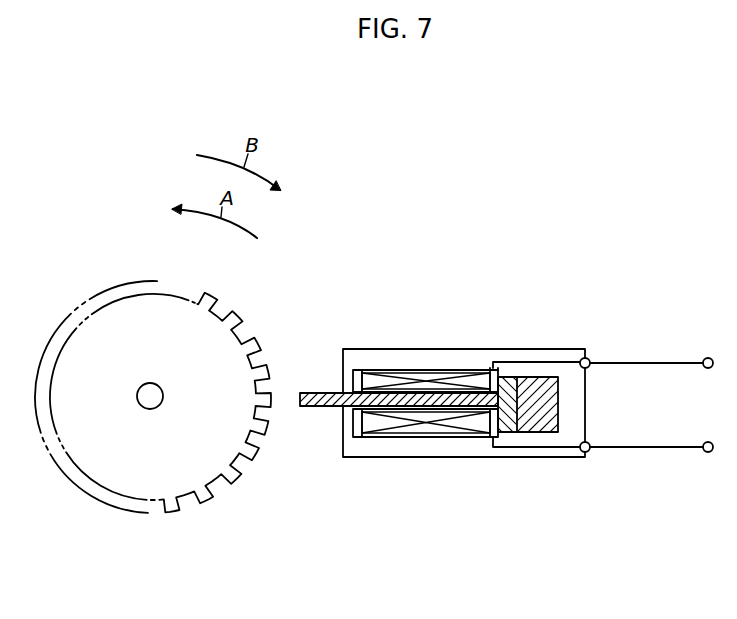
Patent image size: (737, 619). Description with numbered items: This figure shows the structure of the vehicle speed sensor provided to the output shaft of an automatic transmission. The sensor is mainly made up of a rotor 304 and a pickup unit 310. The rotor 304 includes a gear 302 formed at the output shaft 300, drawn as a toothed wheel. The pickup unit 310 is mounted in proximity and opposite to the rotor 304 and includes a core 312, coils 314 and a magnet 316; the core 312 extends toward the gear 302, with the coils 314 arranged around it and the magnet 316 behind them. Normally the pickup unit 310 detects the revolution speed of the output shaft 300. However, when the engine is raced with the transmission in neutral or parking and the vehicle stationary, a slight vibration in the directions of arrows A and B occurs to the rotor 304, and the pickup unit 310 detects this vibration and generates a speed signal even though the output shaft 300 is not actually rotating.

The output shaft 300 is at (93, 470).
The gear 302 is at (250, 461).
The rotor 304 is at (152, 522).
The pickup unit 310 is at (479, 468).
The core 312 is at (321, 392).
The coils 314 is at (422, 370).
The magnet 316 is at (534, 386).